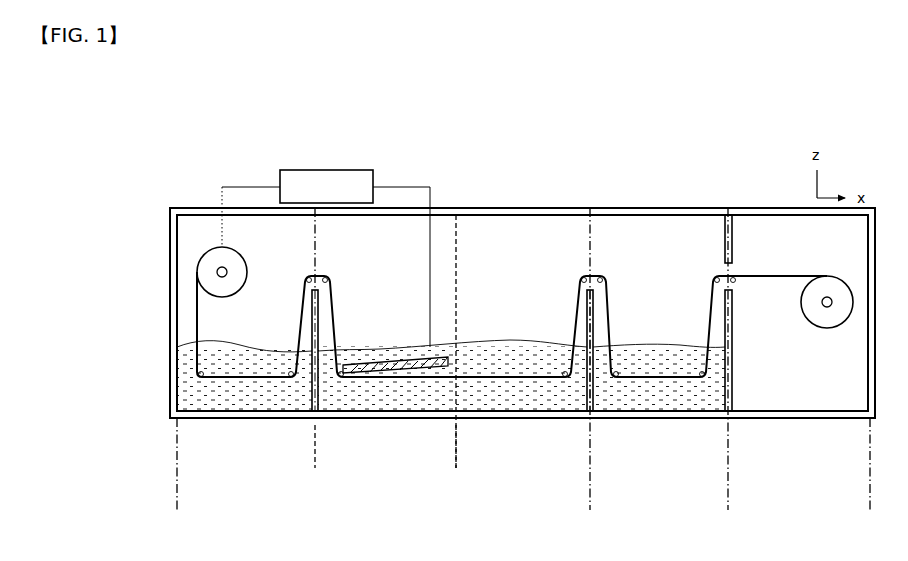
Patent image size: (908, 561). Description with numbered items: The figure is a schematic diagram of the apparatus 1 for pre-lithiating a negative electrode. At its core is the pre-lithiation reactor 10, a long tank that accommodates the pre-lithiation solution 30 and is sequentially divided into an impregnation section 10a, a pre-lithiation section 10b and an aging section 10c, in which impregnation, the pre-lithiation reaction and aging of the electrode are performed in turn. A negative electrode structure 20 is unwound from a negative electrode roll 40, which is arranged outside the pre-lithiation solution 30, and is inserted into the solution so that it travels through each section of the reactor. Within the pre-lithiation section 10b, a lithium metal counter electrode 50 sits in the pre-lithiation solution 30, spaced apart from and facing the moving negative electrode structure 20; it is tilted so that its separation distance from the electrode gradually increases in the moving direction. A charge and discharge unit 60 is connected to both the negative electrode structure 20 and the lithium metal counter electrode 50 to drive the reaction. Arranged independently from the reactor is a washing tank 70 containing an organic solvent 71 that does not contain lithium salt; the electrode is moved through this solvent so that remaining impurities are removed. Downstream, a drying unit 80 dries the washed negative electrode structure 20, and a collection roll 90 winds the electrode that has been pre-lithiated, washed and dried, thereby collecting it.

The apparatus for pre-lithiating a negative electrode 1 is at (130, 125).
The pre-lithiation reactor 10 is at (583, 497).
The impregnation section 10a is at (308, 450).
The pre-lithiation section 10b is at (449, 450).
The aging section 10c is at (583, 450).
The negative electrode structure 20 is at (198, 325).
The pre-lithiation solution 30 is at (183, 363).
The negative electrode roll 40 is at (196, 262).
The lithium metal counter electrode 50 is at (382, 358).
The charge and discharge unit 60 is at (373, 182).
The washing tank 70 is at (721, 497).
The organic solvent 71 is at (647, 360).
The drying unit 80 is at (863, 497).
The collection roll 90 is at (813, 327).